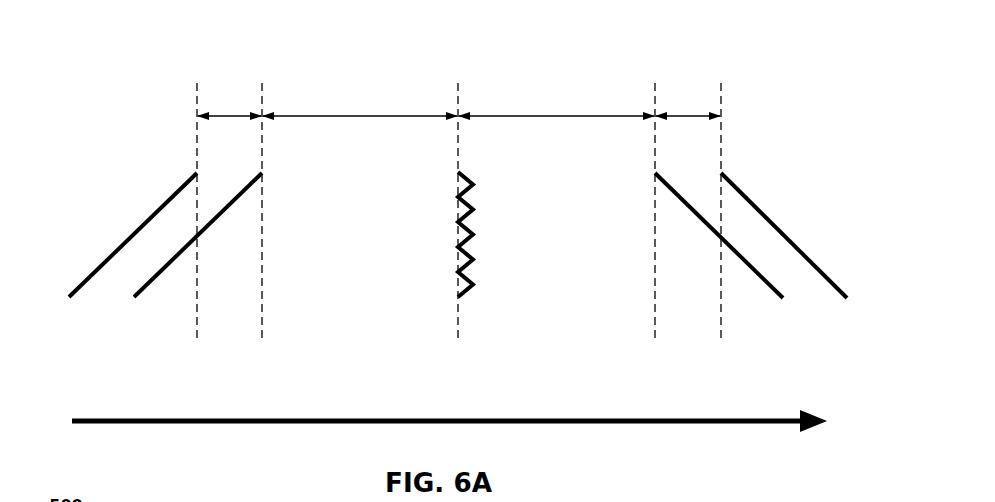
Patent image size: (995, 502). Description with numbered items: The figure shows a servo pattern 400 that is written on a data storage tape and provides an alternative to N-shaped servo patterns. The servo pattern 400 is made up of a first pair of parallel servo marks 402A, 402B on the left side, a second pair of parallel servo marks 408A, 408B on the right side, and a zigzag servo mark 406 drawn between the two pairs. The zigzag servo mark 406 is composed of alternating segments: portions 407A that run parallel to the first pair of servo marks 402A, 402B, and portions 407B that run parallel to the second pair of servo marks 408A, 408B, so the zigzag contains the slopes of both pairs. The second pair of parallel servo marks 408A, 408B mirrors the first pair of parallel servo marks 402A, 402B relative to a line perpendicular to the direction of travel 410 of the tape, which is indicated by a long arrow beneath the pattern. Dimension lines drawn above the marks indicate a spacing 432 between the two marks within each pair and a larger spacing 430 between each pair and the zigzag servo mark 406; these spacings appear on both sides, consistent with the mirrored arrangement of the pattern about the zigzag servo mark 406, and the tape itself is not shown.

The servo pattern 400 is at (116, 70).
The first parallel servo mark 402A is at (70, 298).
The second parallel servo mark 402B is at (137, 297).
The zigzag servo mark 406 is at (475, 283).
The portions of zigzag servo mark 407A is at (473, 284).
The portions of zigzag servo mark 407B is at (470, 280).
The first parallel servo mark of second pair 408A is at (760, 279).
The second parallel servo mark of second pair 408B is at (846, 299).
The direction of travel 410 is at (449, 412).
The spacing between center and outer elements 430 is at (458, 99).
The spacing between paired outer elements 432 is at (459, 99).